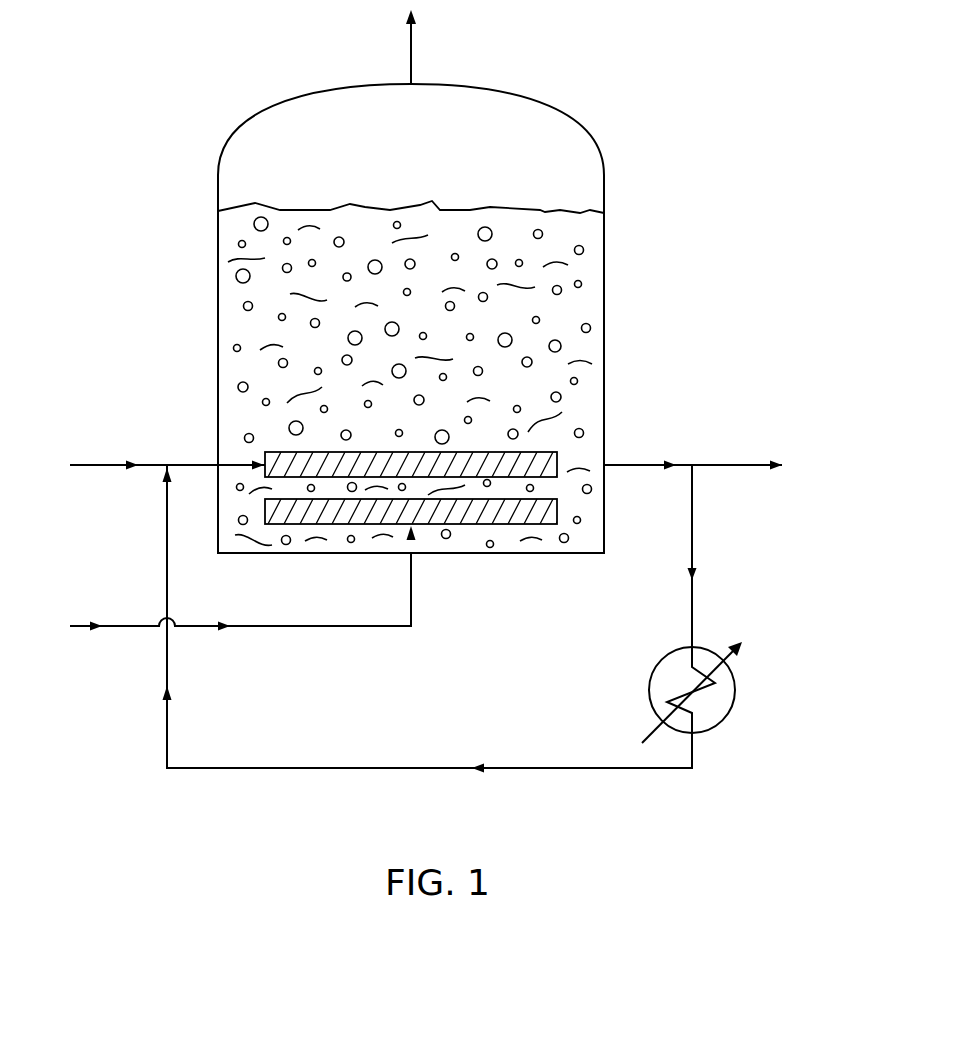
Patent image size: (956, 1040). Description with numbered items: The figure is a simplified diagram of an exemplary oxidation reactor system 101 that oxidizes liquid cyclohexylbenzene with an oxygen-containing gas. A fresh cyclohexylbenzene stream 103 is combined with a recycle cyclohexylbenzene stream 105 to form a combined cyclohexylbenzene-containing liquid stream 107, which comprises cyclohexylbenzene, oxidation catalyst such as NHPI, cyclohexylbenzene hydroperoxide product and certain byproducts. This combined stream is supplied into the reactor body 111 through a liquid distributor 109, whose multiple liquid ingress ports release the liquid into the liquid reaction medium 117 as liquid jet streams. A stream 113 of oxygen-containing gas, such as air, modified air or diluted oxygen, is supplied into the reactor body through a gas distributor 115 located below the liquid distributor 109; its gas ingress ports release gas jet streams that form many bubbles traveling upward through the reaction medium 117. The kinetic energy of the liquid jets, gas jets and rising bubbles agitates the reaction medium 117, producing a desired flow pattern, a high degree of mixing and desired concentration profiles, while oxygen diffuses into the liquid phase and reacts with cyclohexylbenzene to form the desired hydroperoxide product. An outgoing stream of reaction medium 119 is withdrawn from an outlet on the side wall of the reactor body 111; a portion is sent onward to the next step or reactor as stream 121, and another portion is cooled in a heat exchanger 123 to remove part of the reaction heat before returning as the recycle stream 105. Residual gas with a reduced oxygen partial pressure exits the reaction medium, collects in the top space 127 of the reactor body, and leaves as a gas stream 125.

The oxidation reactor system 101 is at (180, 104).
The fresh cyclohexylbenzene stream 103 is at (107, 463).
The recycle cyclohexylbenzene stream 105 is at (167, 555).
The combined cyclohexylbenzene-containing liquid stream 107 is at (192, 463).
The liquid distributor 109 is at (543, 450).
The reactor body 111 is at (597, 153).
The stream of O2-containing gas 113 is at (125, 627).
The gas distributor 115 is at (505, 526).
The liquid reaction medium 117 is at (573, 270).
The outgoing stream of reaction medium 119 is at (647, 463).
The stream to next step/reactor 121 is at (727, 467).
The heat exchanger 123 is at (737, 698).
The gas stream 125 is at (404, 58).
The top space 127 is at (476, 118).